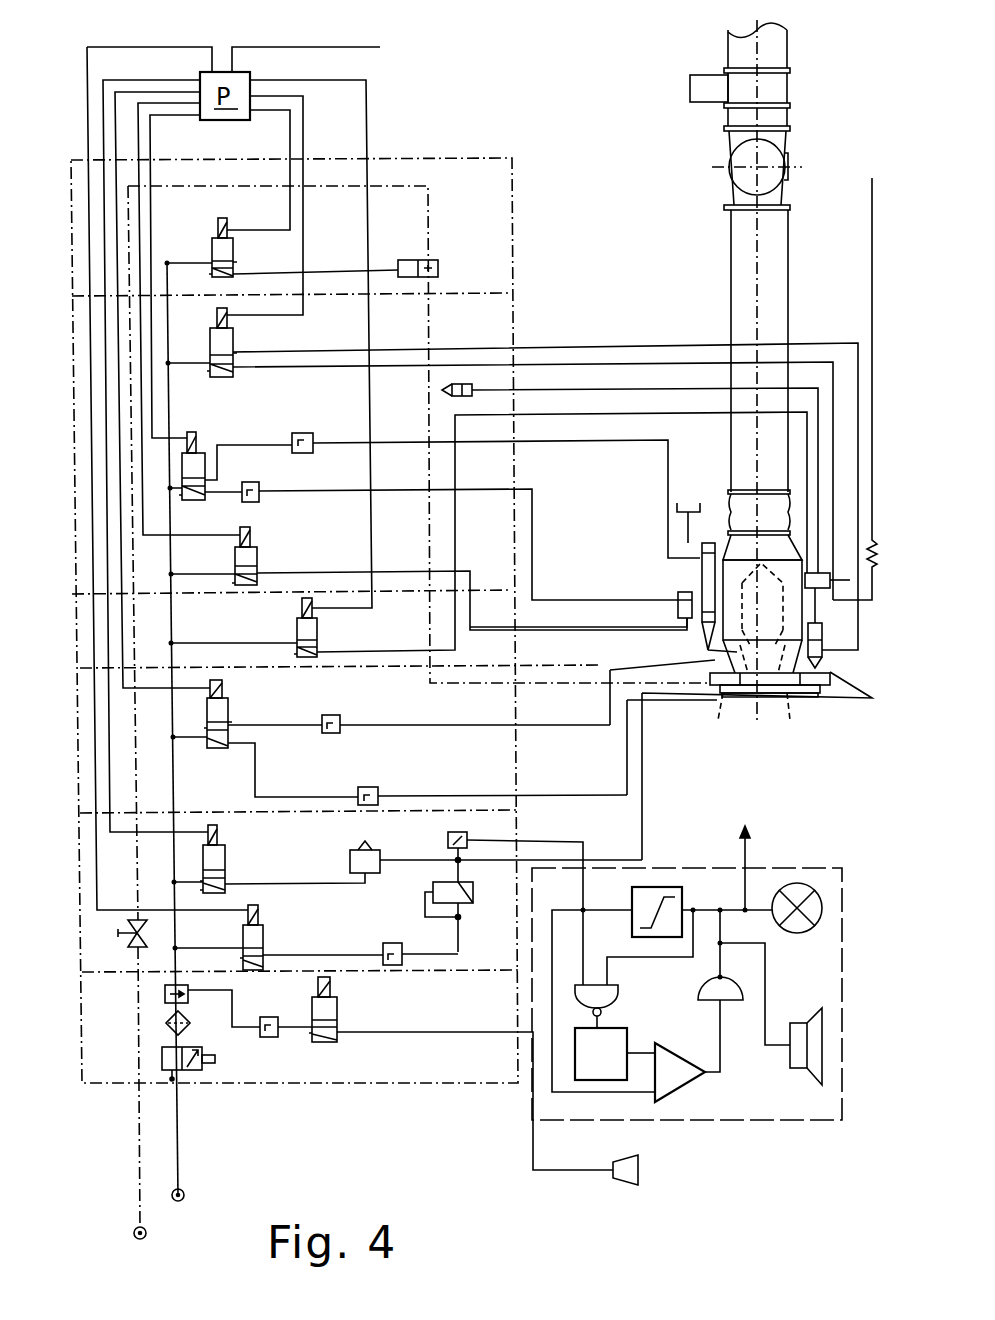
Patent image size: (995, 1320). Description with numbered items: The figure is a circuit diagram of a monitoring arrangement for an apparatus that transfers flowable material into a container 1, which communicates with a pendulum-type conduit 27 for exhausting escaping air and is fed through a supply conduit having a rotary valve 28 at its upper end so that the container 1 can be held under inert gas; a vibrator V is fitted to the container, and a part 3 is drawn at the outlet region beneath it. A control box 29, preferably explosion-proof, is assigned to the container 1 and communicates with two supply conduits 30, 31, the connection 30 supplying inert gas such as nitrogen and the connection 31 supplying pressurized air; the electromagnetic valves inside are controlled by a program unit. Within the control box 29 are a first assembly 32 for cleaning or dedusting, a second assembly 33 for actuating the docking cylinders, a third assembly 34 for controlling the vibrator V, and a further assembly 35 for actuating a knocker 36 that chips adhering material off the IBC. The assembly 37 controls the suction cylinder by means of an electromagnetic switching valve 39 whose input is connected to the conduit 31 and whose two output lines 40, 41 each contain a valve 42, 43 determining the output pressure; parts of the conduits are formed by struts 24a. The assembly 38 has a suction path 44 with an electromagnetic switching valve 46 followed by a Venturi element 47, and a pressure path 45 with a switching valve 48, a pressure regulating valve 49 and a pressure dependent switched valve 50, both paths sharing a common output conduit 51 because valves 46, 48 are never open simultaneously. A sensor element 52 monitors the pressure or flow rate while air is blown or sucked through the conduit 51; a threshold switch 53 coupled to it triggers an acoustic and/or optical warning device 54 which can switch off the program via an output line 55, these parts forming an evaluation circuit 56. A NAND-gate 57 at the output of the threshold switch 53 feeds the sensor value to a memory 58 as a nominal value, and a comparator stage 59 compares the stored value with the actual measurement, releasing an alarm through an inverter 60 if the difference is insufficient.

The container 1 is at (715, 492).
The valve seat plate 3 is at (720, 724).
The struts 24a is at (762, 699).
The pendulum-type conduit 27 is at (872, 268).
The rotary valve 28 is at (740, 180).
The control box 29 is at (460, 158).
The supply conduit 30 is at (133, 1230).
The supply conduit 31 is at (186, 1195).
The first assembly 32 is at (495, 182).
The second assembly 33 is at (497, 323).
The third assembly 34 is at (492, 608).
The assembly 35 is at (420, 1085).
The knocker 36 is at (645, 1172).
The assembly 37 is at (496, 677).
The assembly 38 is at (498, 828).
The electromagnetic switching valve 39 is at (230, 707).
The output line 40 is at (390, 722).
The output line 41 is at (420, 795).
The valve 42 is at (336, 714).
The valve 43 is at (368, 787).
The first path 44 is at (315, 865).
The pressure path 45 is at (362, 933).
The electromagnetic switching valve 46 is at (226, 862).
The check valve 47 is at (378, 851).
The electromagnetic switching valve 48 is at (264, 933).
The pressure regulating valve 49 is at (395, 943).
The pressure dependent switched valve 50 is at (473, 900).
The common output conduit 51 is at (598, 855).
The sensor element 52 is at (460, 832).
The threshold switch 53 is at (680, 890).
The warning device 54 is at (820, 920).
The output line 55 is at (378, 46).
The evaluation circuit 56 is at (668, 867).
The NAND-gate 57 is at (612, 1003).
The memory 58 is at (616, 1068).
The comparator stage 59 is at (688, 1090).
The inverter 60 is at (730, 1010).
The vibrator V is at (822, 595).